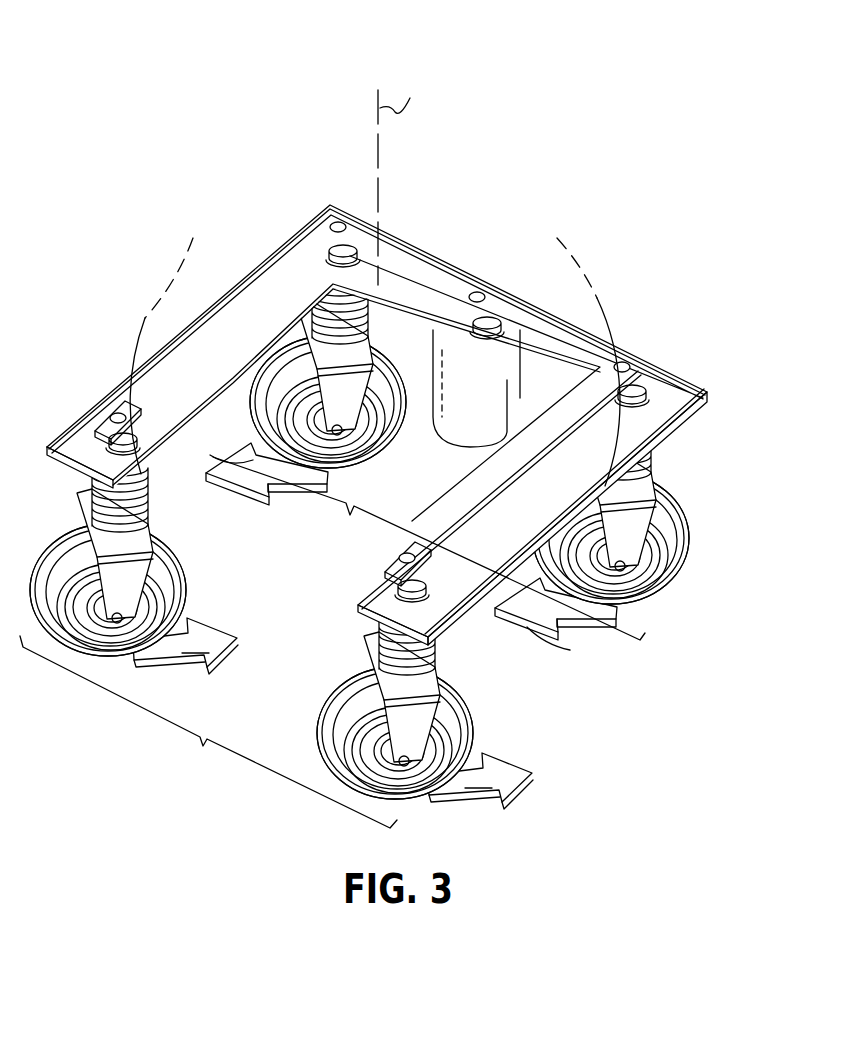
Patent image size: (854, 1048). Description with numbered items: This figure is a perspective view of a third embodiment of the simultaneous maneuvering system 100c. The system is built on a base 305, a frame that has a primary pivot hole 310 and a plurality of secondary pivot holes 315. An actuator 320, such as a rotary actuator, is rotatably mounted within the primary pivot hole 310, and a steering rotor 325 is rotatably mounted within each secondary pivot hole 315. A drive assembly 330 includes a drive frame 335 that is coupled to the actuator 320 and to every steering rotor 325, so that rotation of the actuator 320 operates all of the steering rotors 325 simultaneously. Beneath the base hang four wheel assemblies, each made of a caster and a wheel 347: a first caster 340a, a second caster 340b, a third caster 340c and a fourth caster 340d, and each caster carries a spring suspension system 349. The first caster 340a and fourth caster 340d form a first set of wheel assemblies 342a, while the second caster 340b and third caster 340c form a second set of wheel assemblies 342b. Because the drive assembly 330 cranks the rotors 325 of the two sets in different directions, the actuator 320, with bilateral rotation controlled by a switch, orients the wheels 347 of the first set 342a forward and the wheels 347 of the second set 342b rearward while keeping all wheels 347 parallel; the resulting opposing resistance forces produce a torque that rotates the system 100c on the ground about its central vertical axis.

The simultaneous maneuvering system 100c is at (118, 78).
The base 305 is at (393, 406).
The primary pivot hole 310 is at (504, 349).
The secondary pivot holes 315 is at (658, 390).
The actuator 320 is at (490, 419).
The steering rotors 325 is at (318, 282).
The drive assembly 330 is at (409, 256).
The drive frame 335 is at (520, 312).
The first caster 340a is at (157, 481).
The second caster 340b is at (372, 316).
The third caster 340c is at (658, 468).
The fourth caster 340d is at (363, 627).
The first set of wheel assemblies 342a is at (208, 732).
The second set of wheel assemblies 342b is at (429, 548).
The wheel 347 is at (185, 573).
The suspension system 349 is at (152, 505).